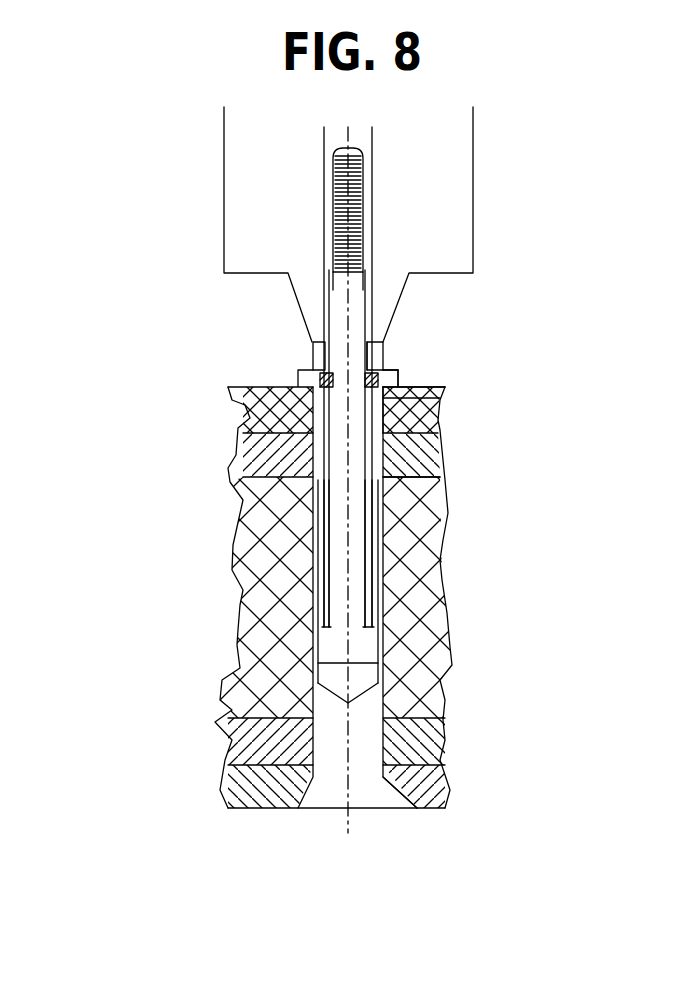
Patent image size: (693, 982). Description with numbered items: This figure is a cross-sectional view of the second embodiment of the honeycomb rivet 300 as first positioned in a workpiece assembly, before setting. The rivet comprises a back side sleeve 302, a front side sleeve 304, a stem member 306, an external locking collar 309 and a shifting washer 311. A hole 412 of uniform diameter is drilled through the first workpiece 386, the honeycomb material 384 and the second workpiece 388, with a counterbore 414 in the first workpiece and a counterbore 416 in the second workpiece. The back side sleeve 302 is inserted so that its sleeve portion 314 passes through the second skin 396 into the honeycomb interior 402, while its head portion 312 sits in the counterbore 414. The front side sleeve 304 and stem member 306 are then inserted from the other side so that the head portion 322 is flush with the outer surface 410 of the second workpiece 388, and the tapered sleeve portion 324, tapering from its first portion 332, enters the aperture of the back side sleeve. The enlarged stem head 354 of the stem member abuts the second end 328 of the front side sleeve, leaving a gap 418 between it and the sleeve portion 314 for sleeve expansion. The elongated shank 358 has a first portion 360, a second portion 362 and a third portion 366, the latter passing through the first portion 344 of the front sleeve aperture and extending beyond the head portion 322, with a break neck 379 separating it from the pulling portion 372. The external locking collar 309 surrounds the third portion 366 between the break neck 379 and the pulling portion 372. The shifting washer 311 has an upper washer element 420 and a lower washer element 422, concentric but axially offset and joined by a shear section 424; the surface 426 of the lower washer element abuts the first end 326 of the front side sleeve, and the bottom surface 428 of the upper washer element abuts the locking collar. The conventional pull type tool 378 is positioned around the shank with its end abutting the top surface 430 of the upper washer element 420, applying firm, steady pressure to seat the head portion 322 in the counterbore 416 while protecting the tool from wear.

The honeycomb rivet 300 is at (180, 347).
The back side sleeve 302 is at (386, 706).
The front side sleeve 304 is at (231, 462).
The stem member 306 is at (338, 303).
The external locking collar 309 is at (393, 370).
The shifting washer 311 is at (298, 377).
The head portion of the back side sleeve 312 is at (363, 810).
The sleeve portion of the back side sleeve 314 is at (455, 606).
The head portion of the front side sleeve 322 is at (243, 523).
The sleeve portion of the front side sleeve 324 is at (360, 505).
The first end of the front side sleeve 326 is at (322, 563).
The second end of the front side sleeve 328 is at (317, 682).
The first portion of the sleeve portion 332 is at (390, 440).
The first portion of the aperture 344 is at (385, 395).
The enlarged stem head 354 is at (368, 650).
The elongated shank 358 is at (366, 335).
The first portion of the elongated shank 360 is at (318, 600).
The second portion of the elongated shank 362 is at (400, 520).
The third portion of the elongated shank 366 is at (383, 348).
The pulling portion 372 is at (357, 203).
The pull type tool 378 is at (462, 166).
The break neck 379 is at (380, 405).
The honeycomb material 384 is at (445, 553).
The first workpiece 386 is at (425, 777).
The second workpiece 388 is at (387, 418).
The second skin of the honeycomb material 396 is at (422, 730).
The honeycomb interior 402 is at (440, 575).
The outer surface of the second workpiece 410 is at (398, 372).
The hole 412 is at (292, 808).
The counterbore 414 is at (398, 808).
The counterbore 416 is at (228, 437).
The gap 418 is at (216, 724).
The upper washer element 420 is at (314, 350).
The lower washer element 422 is at (305, 367).
The shear section 424 is at (310, 362).
The surface of the lower washer element 426 is at (395, 385).
The bottom surface of the upper washer element 428 is at (392, 362).
The top surface of the upper washer element 430 is at (360, 330).